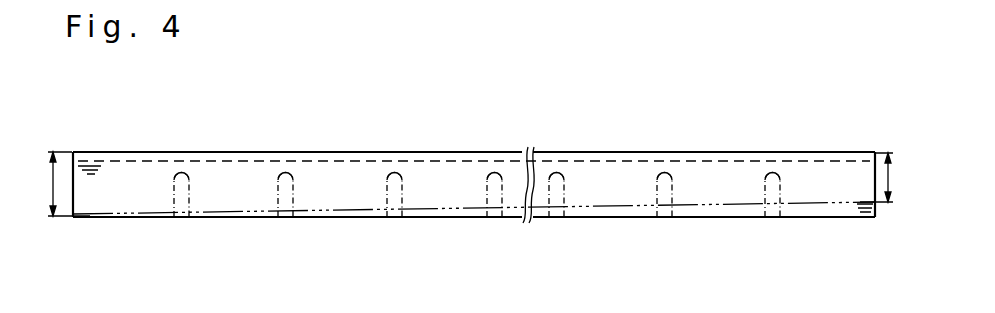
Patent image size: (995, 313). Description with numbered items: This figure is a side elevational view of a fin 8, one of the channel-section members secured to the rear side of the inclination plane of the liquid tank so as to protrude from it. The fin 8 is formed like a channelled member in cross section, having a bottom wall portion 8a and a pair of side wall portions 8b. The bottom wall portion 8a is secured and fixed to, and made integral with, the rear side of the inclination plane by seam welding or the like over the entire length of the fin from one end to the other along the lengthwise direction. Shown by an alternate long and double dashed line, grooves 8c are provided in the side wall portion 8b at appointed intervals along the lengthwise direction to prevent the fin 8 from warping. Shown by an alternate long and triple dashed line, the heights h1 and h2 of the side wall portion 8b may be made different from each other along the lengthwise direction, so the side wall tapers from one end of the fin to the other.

The fin 8 is at (606, 142).
The bottom wall portion 8a is at (357, 160).
The side wall portion 8b is at (263, 208).
The groove 8c is at (183, 199).
The height of side wall portion at one end h1 is at (56, 187).
The height of side wall portion at other end h2 is at (877, 181).